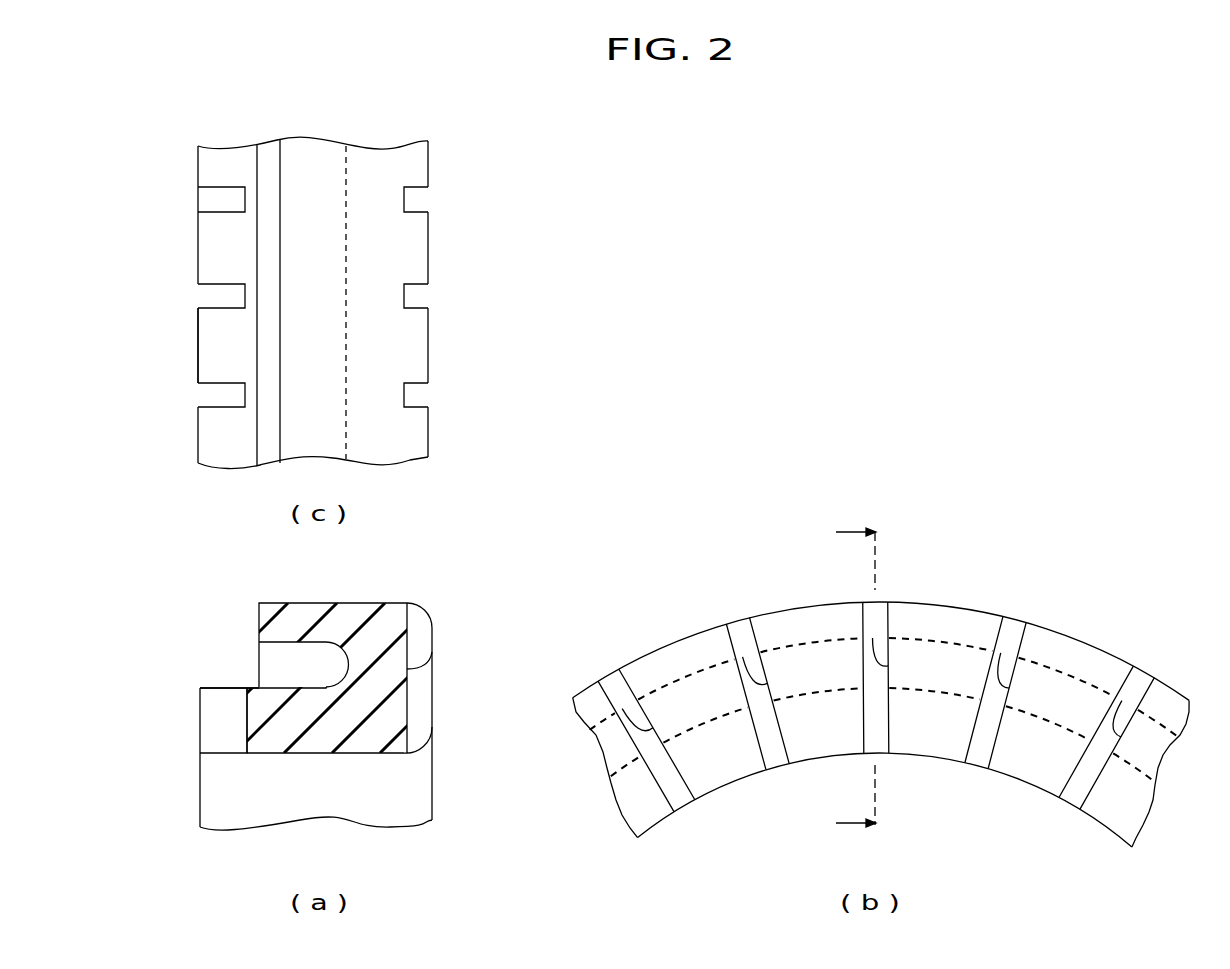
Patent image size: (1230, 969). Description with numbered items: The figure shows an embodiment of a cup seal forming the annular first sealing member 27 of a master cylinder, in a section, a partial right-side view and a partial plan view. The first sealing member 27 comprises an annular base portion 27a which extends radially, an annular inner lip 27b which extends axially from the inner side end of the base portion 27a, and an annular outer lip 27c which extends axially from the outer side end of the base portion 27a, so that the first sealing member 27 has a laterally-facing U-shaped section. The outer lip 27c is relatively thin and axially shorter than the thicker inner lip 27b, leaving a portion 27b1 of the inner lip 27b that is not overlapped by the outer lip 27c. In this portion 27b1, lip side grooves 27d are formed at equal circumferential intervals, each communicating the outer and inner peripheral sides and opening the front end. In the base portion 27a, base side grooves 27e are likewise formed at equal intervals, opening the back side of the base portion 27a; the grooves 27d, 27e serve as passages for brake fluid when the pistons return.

The first sealing member 27 is at (452, 170).
The base portion 27a is at (375, 167).
The inner lip 27b is at (287, 720).
The portion of the inner lip 27b1 is at (225, 687).
The outer lip 27c is at (300, 165).
The lip side groove 27d is at (243, 195).
The base side groove 27e is at (407, 193).